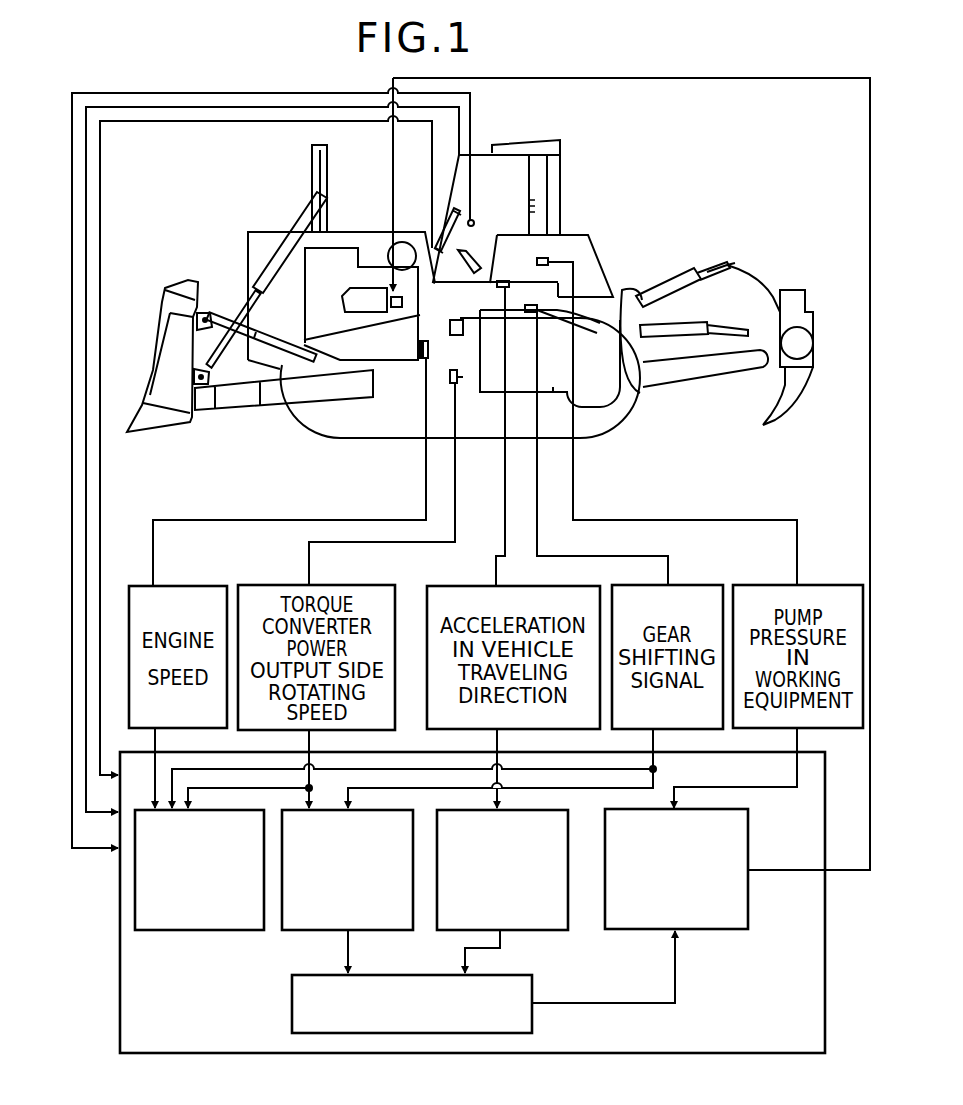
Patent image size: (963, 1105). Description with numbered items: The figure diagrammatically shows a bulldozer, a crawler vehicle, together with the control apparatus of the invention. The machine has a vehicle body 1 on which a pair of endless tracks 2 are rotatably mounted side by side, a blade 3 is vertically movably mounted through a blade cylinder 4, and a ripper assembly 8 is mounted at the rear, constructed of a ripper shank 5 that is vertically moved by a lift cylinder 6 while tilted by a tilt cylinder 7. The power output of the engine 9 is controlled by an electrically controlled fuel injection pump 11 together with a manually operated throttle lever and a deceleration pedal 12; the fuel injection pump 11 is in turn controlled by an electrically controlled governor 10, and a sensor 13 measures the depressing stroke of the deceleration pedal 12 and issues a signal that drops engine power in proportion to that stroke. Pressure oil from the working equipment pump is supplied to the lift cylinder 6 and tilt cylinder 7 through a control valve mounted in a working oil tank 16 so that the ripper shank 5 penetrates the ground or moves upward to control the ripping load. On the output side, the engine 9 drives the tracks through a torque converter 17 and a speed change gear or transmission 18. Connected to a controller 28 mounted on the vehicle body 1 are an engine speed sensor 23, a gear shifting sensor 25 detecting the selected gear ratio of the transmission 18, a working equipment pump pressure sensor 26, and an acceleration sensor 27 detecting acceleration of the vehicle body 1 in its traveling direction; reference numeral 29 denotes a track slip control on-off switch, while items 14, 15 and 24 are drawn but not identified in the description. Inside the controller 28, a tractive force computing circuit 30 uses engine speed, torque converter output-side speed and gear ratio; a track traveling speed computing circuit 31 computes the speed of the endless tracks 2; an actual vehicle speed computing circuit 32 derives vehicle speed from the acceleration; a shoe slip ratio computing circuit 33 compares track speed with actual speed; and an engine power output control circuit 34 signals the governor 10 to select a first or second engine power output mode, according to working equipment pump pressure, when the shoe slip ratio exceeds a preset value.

The vehicle body 1 is at (375, 230).
The endless tracks 2 is at (290, 428).
The blade 3 is at (160, 362).
The blade cylinder 4 is at (295, 222).
The ripper shank 5 is at (790, 405).
The lift cylinder 6 is at (688, 325).
The tilt cylinder 7 is at (665, 282).
The ripper assembly 8 is at (757, 268).
The engine 9 is at (347, 248).
The electrically controlled governor 10 is at (400, 295).
The electrically controlled fuel injection pump 11 is at (345, 294).
The deceleration pedal 12 is at (478, 252).
The sensor 13 is at (452, 285).
The governor lever 14 is at (455, 207).
The final drive 15 is at (450, 328).
The working oil tank 16 is at (548, 240).
The torque converter 17 is at (450, 378).
The transmission 18 is at (555, 388).
The engine speed sensor 23 is at (416, 356).
The sprocket 24 is at (458, 378).
The gear shifting sensor 25 is at (537, 312).
The working equipment pump pressure sensor 26 is at (552, 260).
The acceleration sensor 27 is at (498, 286).
The controller 28 is at (493, 890).
The track slip control on-off switch 29 is at (474, 218).
The tractive force computing circuit 30 is at (196, 931).
The track traveling speed computing circuit 31 is at (302, 932).
The actual vehicle speed computing circuit 32 is at (538, 932).
The shoe slip ratio computing circuit 33 is at (292, 1010).
The engine power output control circuit 34 is at (710, 931).